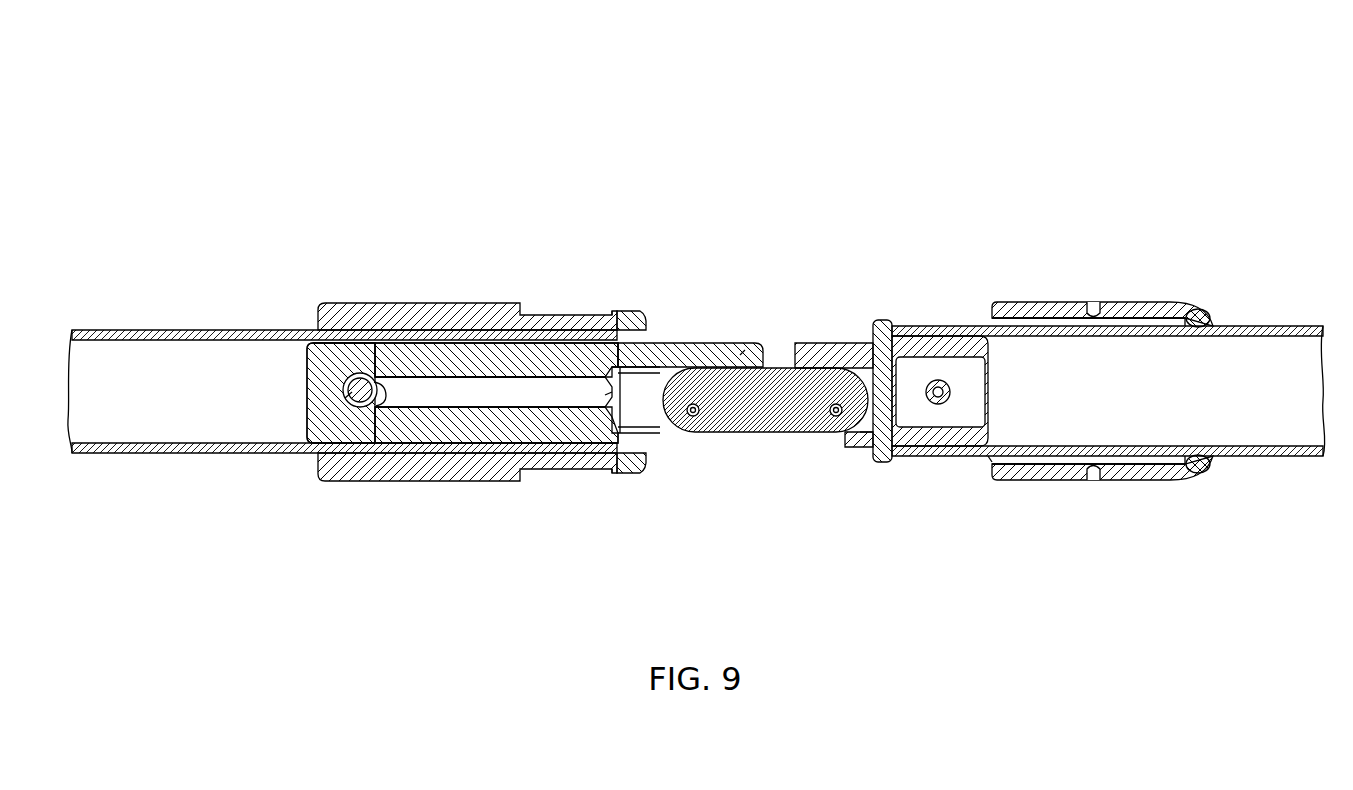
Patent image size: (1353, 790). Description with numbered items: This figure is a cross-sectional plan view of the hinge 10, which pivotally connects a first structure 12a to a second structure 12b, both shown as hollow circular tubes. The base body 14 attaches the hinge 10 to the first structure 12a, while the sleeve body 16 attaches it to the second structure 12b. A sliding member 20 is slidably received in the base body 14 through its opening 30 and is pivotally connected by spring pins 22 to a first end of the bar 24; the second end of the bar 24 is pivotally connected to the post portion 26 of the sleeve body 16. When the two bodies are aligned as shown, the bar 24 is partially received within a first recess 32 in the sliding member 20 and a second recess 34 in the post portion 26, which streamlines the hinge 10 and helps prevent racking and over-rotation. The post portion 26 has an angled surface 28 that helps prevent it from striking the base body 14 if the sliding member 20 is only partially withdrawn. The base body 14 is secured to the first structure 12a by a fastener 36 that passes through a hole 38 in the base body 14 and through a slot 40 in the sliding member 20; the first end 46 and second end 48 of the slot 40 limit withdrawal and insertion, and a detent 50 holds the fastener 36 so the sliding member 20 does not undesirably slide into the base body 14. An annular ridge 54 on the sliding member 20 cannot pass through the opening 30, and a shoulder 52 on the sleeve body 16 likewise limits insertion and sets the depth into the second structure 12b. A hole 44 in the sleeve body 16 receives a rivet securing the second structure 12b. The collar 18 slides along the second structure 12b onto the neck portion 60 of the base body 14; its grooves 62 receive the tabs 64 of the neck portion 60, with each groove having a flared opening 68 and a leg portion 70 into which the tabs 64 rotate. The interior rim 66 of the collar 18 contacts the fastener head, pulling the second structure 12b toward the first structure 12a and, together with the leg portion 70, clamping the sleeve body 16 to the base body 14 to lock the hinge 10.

The hinge 10 is at (888, 104).
The first structure 12a is at (176, 330).
The second structure 12b is at (1290, 326).
The base body 14 is at (465, 248).
The sleeve body 16 is at (982, 271).
The collar 18 is at (1125, 304).
The sliding member 20 is at (740, 355).
The spring pins 22 is at (695, 416).
The bar 24 is at (765, 416).
The post portion 26 is at (830, 345).
The angled surface 28 is at (800, 360).
The opening 30 is at (658, 336).
The first recess 32 is at (648, 412).
The second recess 34 is at (862, 431).
The fastener 36 is at (351, 432).
The hole 38 is at (365, 380).
The slot 40 is at (456, 388).
The hole 44 is at (935, 383).
The first end 46 is at (350, 398).
The second end 48 is at (607, 398).
The detent 50 is at (379, 402).
The shoulder 52 is at (885, 322).
The annular ridge 54 is at (636, 313).
The neck portion 60 is at (547, 316).
The grooves 62 is at (1115, 304).
The tabs 64 is at (626, 317).
The interior rim 66 is at (1195, 309).
The opening 68 is at (989, 462).
The leg portion 70 is at (1093, 304).